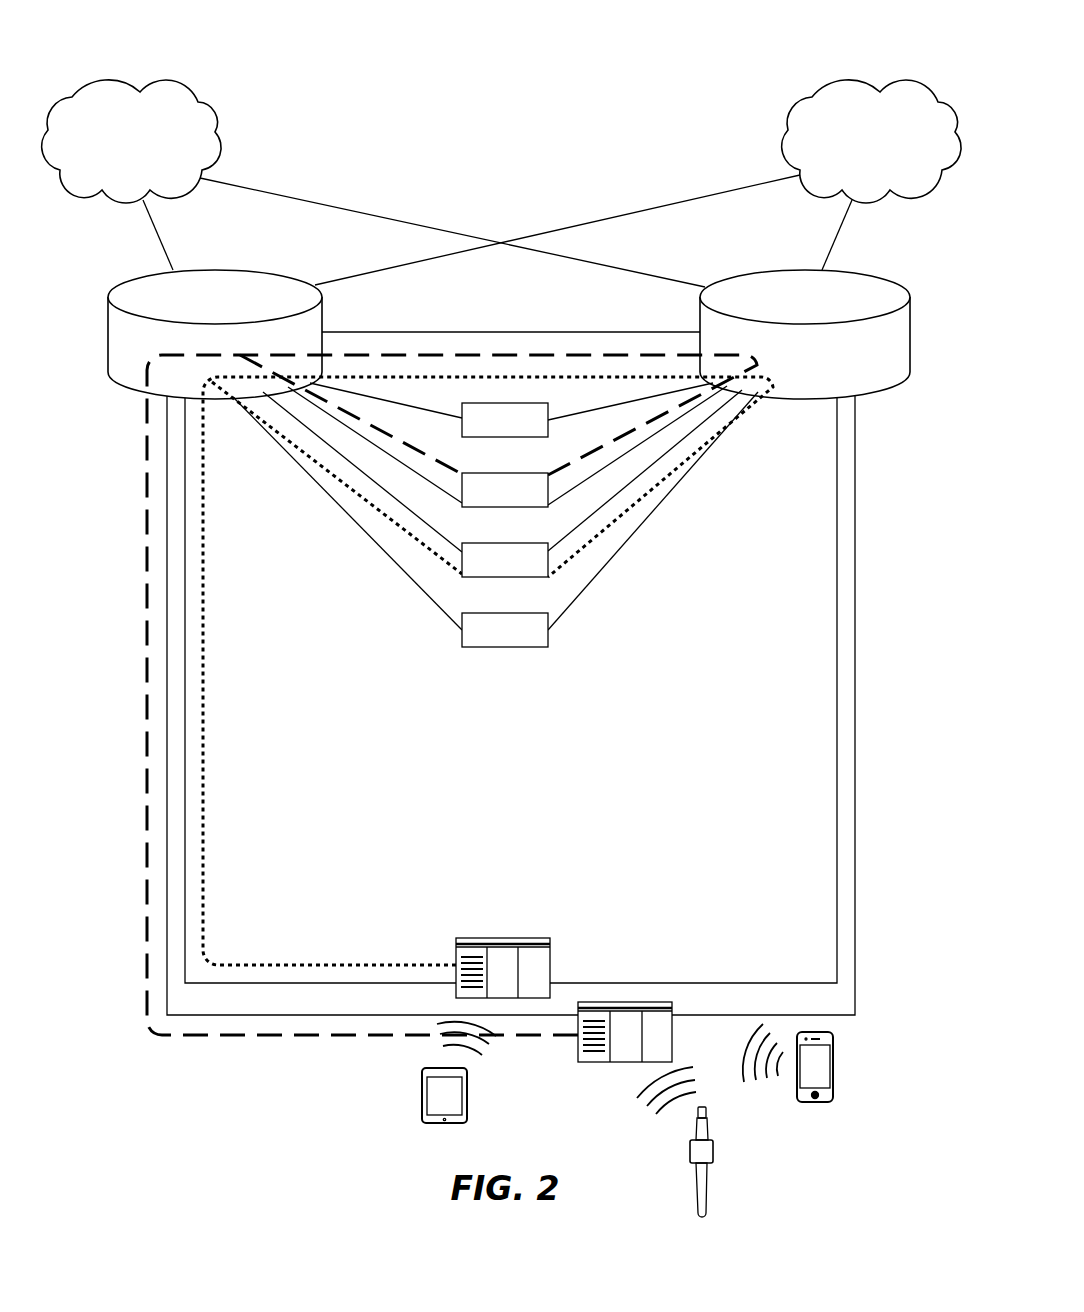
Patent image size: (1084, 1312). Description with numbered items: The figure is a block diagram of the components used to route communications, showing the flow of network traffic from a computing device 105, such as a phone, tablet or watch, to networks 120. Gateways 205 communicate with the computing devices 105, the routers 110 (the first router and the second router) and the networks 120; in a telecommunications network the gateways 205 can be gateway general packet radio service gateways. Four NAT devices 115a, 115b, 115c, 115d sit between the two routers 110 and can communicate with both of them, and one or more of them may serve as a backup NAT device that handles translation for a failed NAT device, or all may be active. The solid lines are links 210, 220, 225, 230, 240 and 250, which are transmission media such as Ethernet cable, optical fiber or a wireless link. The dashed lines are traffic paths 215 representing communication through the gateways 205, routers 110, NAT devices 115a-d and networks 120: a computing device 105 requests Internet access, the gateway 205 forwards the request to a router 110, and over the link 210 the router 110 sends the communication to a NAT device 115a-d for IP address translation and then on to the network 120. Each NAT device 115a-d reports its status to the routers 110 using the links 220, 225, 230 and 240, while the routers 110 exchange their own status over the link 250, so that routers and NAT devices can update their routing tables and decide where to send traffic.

The computing device 105 is at (422, 1100).
The router 110 is at (135, 279).
The NAT device 115a is at (487, 438).
The NAT device 115b is at (487, 508).
The NAT device 115c is at (487, 578).
The NAT device 115d is at (487, 648).
The network 120 is at (118, 78).
The gateway 205 is at (538, 938).
The link 210 is at (165, 712).
The traffic path 215 is at (147, 783).
The link 220 is at (635, 545).
The link 225 is at (652, 473).
The link 230 is at (678, 420).
The link 240 is at (602, 407).
The link 250 is at (500, 332).